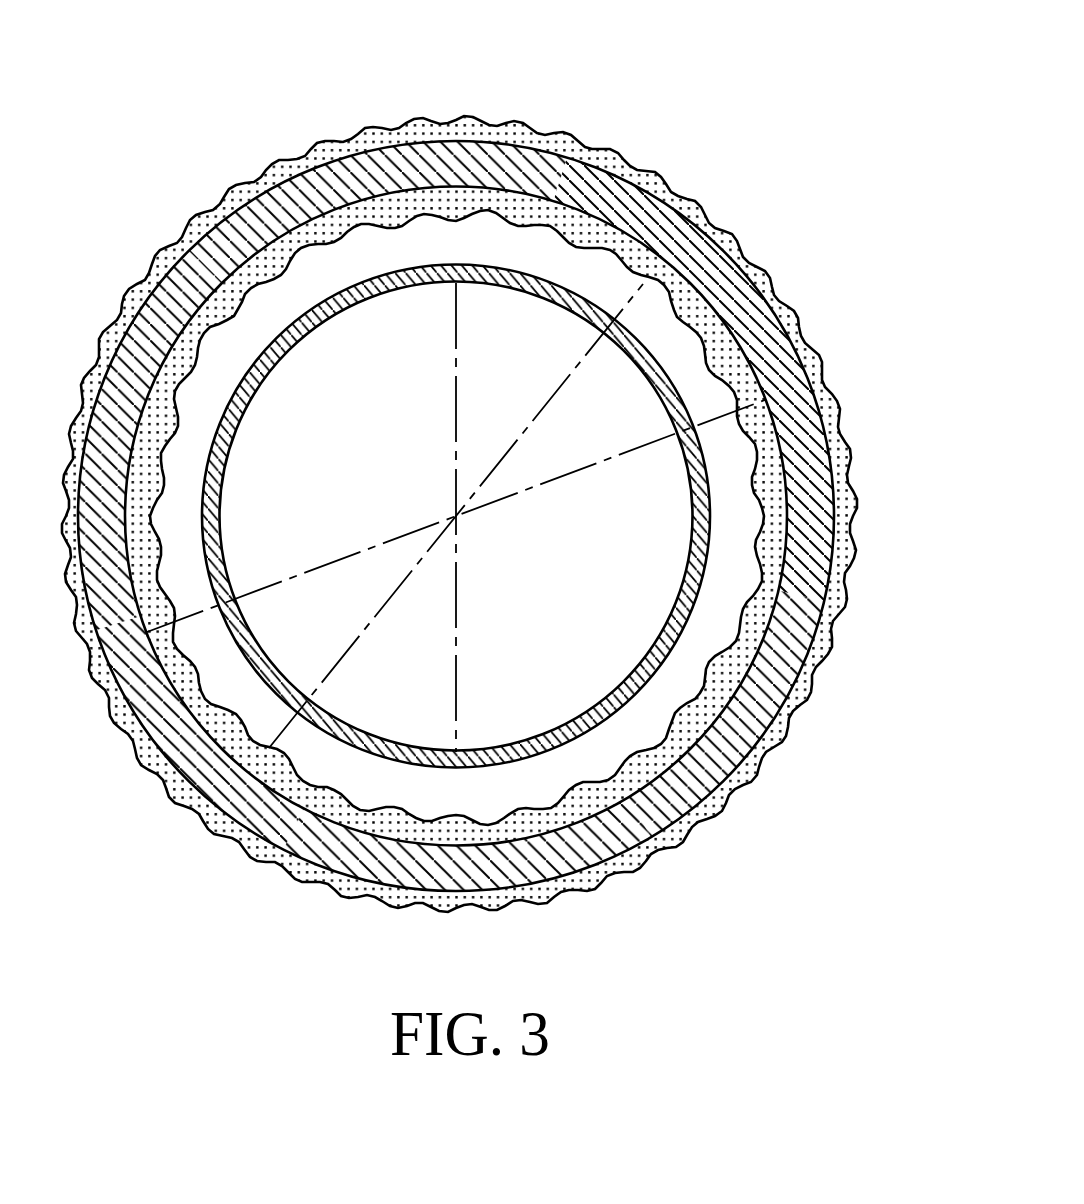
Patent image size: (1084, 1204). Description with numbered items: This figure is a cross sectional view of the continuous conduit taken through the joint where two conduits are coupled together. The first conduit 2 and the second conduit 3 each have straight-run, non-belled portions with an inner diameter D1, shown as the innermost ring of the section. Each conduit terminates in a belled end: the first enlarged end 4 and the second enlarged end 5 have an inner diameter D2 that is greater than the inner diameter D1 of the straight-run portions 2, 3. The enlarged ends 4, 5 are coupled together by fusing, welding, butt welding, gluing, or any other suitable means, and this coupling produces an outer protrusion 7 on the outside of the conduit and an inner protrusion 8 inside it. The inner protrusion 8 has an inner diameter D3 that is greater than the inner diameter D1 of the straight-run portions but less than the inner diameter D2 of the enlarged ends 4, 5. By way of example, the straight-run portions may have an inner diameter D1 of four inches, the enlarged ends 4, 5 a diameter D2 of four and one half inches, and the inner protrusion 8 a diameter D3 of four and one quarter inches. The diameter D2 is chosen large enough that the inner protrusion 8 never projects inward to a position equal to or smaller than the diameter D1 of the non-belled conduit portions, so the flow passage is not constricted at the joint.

The first conduit 2 is at (455, 426).
The second conduit 3 is at (300, 320).
The first enlarged end 4 is at (456, 459).
The second enlarged end 5 is at (633, 203).
The outer protrusion 7 is at (845, 443).
The inner protrusion 8 is at (716, 310).
The inner diameter of straight run portions D1 is at (459, 600).
The inner diameter of enlarged ends D2 is at (333, 560).
The inner diameter of inner protrusion D3 is at (523, 428).